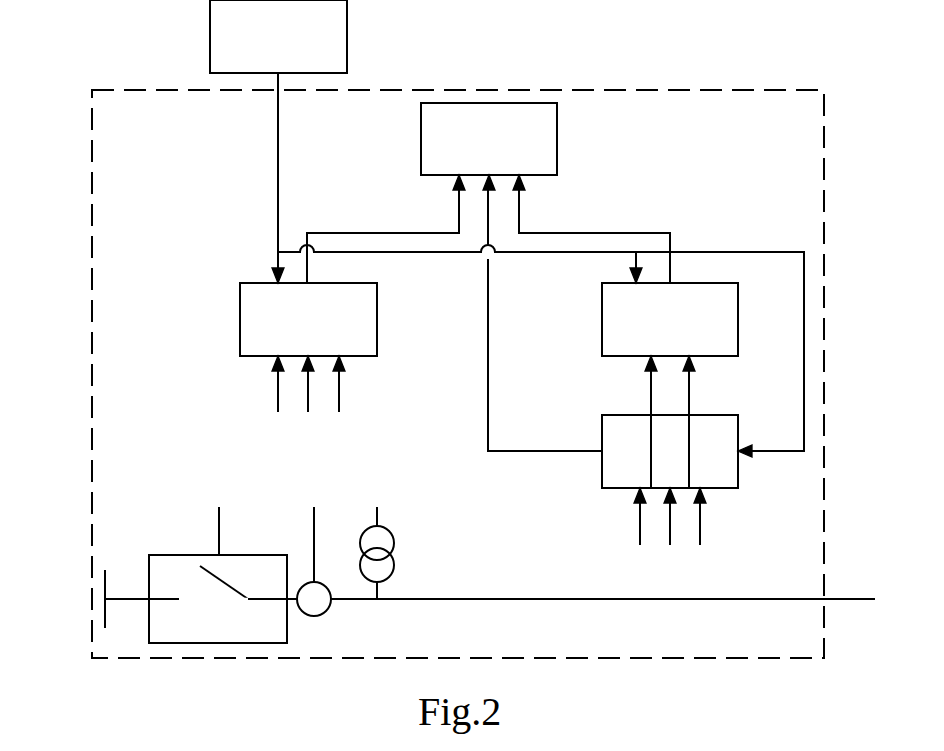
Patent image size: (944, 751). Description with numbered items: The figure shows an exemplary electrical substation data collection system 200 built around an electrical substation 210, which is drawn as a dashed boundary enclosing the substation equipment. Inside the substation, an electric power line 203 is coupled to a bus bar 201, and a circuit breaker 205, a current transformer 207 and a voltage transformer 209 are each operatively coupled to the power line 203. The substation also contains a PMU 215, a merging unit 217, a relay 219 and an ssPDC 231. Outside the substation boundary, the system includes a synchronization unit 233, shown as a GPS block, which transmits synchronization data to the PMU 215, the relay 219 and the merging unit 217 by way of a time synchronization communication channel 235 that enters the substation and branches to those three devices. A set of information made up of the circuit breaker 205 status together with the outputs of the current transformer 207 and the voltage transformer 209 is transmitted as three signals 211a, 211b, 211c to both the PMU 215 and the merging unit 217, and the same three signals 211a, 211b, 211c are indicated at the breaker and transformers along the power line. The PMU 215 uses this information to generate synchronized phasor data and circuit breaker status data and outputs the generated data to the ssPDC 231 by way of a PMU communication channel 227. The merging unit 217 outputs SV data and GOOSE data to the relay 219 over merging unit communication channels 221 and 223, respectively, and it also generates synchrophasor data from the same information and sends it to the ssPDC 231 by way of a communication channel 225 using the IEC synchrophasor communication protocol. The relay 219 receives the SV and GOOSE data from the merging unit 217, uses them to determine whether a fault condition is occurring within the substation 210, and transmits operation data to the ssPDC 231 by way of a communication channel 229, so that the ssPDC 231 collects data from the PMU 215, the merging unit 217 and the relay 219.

The electrical substation data collection system 200 is at (705, 668).
The bus bar 201 is at (105, 583).
The electric power line 203 is at (530, 599).
The circuit breaker 205 is at (287, 623).
The current transformer 207 is at (326, 584).
The voltage transformer 209 is at (394, 566).
The electrical substation 210 is at (738, 90).
The set of information (phase a) 211a is at (278, 387).
The set of information (phase b) 211b is at (308, 406).
The set of information (phase c) 211c is at (339, 388).
The PMU 215 is at (377, 297).
The merging unit 217 is at (738, 472).
The relay 219 is at (738, 297).
The merging unit communication channel 221 is at (651, 389).
The merging unit communication channel 223 is at (689, 388).
The communication channel 225 is at (488, 386).
The PMU communication channel 227 is at (383, 233).
The communication channel 229 is at (590, 233).
The ssPDC 231 is at (557, 107).
The synchronization unit 233 is at (347, 12).
The time synchronization communication channel 235 is at (278, 116).